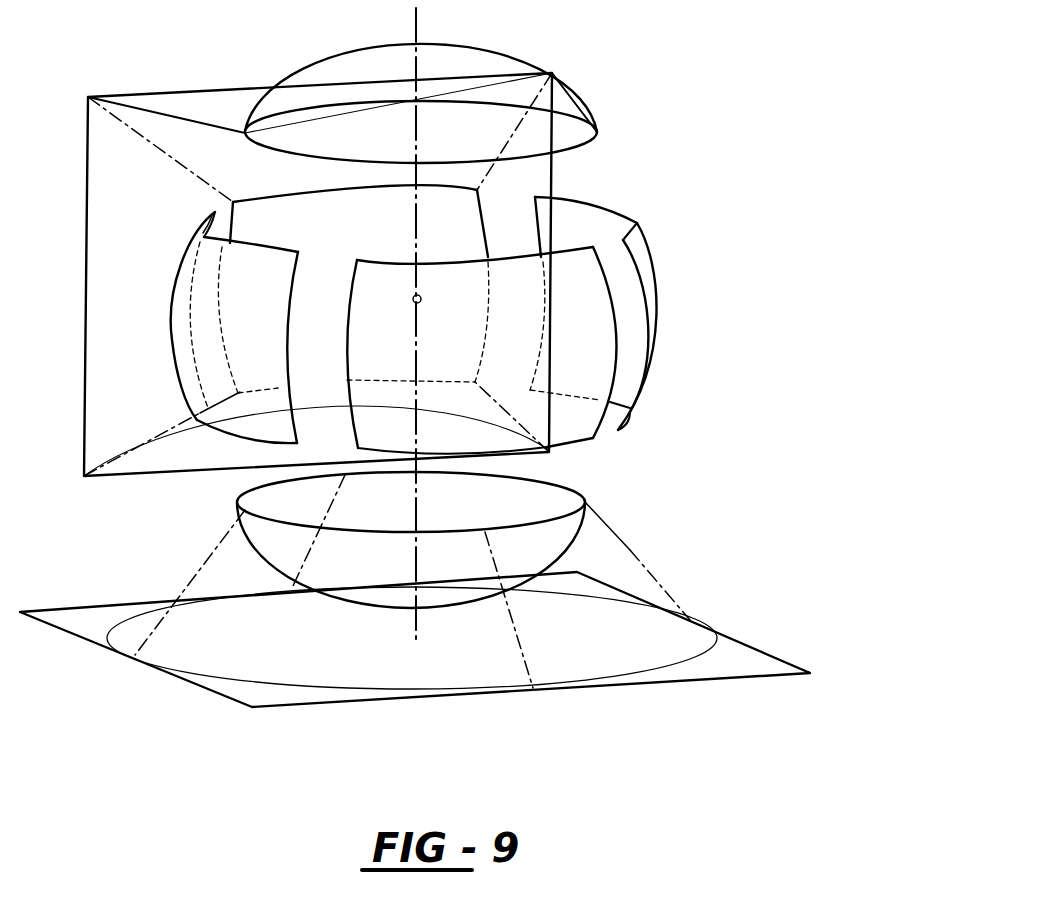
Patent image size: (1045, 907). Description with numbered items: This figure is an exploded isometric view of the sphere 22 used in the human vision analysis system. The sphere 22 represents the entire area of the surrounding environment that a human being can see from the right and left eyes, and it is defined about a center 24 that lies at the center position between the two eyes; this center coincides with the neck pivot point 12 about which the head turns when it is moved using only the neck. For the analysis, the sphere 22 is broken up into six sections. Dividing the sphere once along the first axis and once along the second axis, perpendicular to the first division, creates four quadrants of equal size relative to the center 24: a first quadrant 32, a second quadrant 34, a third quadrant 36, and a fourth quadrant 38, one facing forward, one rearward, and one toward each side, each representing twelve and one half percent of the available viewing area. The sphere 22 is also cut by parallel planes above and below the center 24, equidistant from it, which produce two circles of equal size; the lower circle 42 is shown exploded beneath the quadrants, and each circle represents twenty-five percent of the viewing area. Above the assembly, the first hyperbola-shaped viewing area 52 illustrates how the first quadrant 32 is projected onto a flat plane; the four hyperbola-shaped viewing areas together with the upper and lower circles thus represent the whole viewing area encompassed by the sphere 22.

The neck pivot point 12 is at (455, 319).
The center 24 is at (421, 299).
The sphere 22 is at (731, 275).
The first quadrant 32 is at (300, 193).
The second quadrant 34 is at (593, 204).
The third quadrant 36 is at (588, 441).
The fourth quadrant 38 is at (170, 306).
The lower circle 42 is at (117, 623).
The first hyperbola-shaped viewing area 52 is at (203, 126).